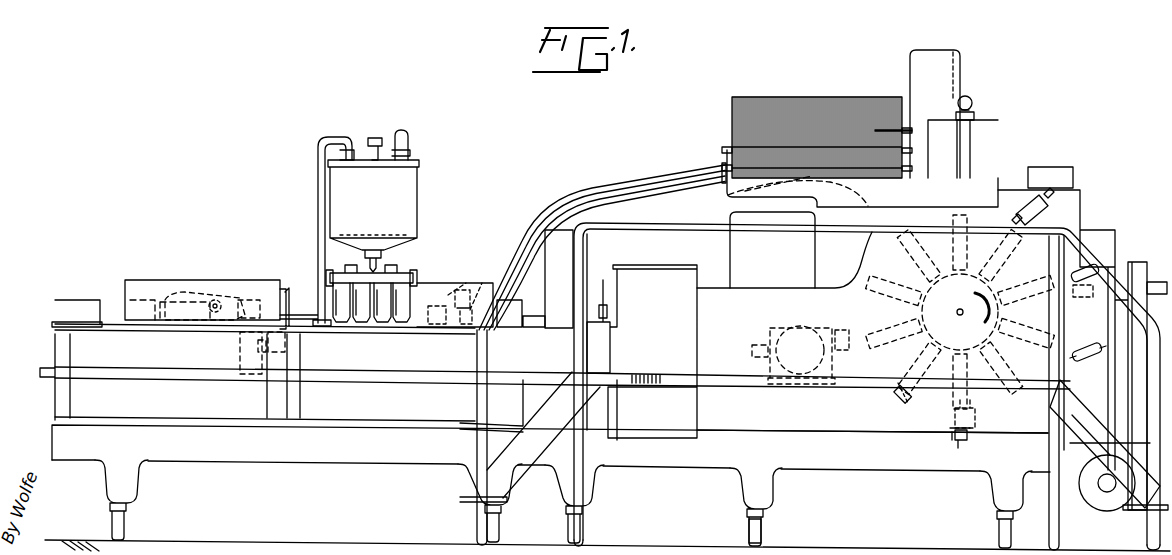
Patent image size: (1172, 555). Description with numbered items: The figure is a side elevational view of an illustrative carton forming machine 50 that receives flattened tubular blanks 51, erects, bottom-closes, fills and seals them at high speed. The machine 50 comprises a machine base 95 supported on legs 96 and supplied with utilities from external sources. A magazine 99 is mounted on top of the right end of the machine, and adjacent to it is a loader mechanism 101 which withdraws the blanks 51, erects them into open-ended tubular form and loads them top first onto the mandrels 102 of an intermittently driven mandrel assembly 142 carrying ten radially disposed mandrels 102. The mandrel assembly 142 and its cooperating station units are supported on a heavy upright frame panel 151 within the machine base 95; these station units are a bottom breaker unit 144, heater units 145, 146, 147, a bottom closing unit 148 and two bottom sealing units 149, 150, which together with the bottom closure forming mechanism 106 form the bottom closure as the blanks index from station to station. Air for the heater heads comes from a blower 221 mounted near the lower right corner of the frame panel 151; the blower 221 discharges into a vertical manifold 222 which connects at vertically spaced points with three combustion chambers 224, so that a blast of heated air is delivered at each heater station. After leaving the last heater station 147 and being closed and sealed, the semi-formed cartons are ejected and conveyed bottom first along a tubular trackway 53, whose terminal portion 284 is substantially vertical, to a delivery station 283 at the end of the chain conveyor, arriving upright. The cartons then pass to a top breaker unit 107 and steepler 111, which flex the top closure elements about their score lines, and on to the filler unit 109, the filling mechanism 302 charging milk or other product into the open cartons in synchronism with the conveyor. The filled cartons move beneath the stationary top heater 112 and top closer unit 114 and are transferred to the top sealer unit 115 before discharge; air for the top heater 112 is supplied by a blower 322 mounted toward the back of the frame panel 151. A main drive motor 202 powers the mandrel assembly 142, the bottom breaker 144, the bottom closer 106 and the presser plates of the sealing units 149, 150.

The machine 50 is at (545, 153).
The tubular blank 51 is at (833, 72).
The tubular trackway 53 is at (670, 178).
The magazine 99 is at (727, 147).
The loader mechanism 101 is at (998, 120).
The frame panel 151 is at (1022, 195).
The bottom breaker unit 144 is at (1040, 212).
The mandrels 102 is at (902, 253).
The heater unit 145 is at (1100, 250).
The combustion chambers 224 is at (1128, 270).
The vertical manifold 222 is at (1147, 290).
The blower 221 is at (1098, 500).
The heater unit 146 is at (1068, 333).
The mandrel assembly 142 is at (938, 311).
The bottom sealing unit 149 is at (897, 405).
The heater unit 147 is at (991, 408).
The bottom closing unit 148 is at (968, 441).
The bottom closure forming mechanism 106 is at (951, 428).
The machine base 95 is at (895, 458).
The legs 96 is at (748, 535).
The main drive motor 202 is at (775, 330).
The bottom sealing unit 150 is at (833, 327).
The filling mechanism 302 is at (424, 196).
The filler unit 109 is at (398, 274).
The steepler 111 is at (456, 283).
The top breaker unit 107 is at (490, 251).
The terminal portion of the trackway 284 is at (562, 279).
The delivery station 283 is at (530, 318).
The top closer unit 114 is at (135, 296).
The top heater 112 is at (217, 295).
The top sealer unit 115 is at (55, 320).
The blower 322 is at (258, 347).